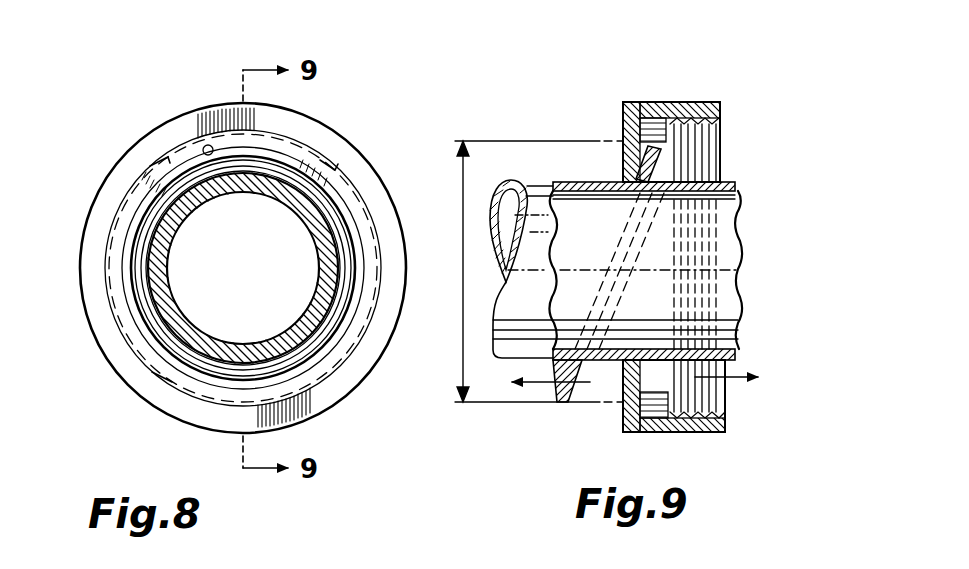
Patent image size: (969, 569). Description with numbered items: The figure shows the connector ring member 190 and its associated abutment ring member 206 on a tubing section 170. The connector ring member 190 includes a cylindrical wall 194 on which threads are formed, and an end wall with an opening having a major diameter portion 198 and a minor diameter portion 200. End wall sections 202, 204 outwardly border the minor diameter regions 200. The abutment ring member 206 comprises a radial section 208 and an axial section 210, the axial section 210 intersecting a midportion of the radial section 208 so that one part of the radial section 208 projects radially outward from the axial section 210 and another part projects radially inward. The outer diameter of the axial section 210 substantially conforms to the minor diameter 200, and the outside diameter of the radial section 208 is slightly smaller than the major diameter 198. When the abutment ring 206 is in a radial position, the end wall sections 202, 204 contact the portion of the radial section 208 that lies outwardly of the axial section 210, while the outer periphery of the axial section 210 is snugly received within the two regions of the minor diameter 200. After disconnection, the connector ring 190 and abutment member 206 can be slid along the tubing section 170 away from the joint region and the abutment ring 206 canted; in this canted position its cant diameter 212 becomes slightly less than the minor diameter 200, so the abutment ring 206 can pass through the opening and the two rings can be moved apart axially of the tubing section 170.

In FIG. 9, the tubing section 170 is at (624, 281).
In FIG. 8, the connector ring member 190 is at (332, 131).
In FIG. 9, the connector ring member 190 is at (670, 102).
In FIG. 8, the cylindrical wall 194 is at (364, 160).
In FIG. 8, the major diameter portion 198 is at (124, 212).
In FIG. 8, the minor diameter portion 200 is at (205, 150).
In FIG. 8, the end wall section 202 is at (152, 170).
In FIG. 8, the end wall section 204 is at (160, 376).
In FIG. 9, the abutment ring member 206 is at (560, 410).
In FIG. 9, the radial section 208 is at (680, 165).
In FIG. 9, the axial section 210 is at (640, 165).
In FIG. 9, the cant diameter 212 is at (463, 292).